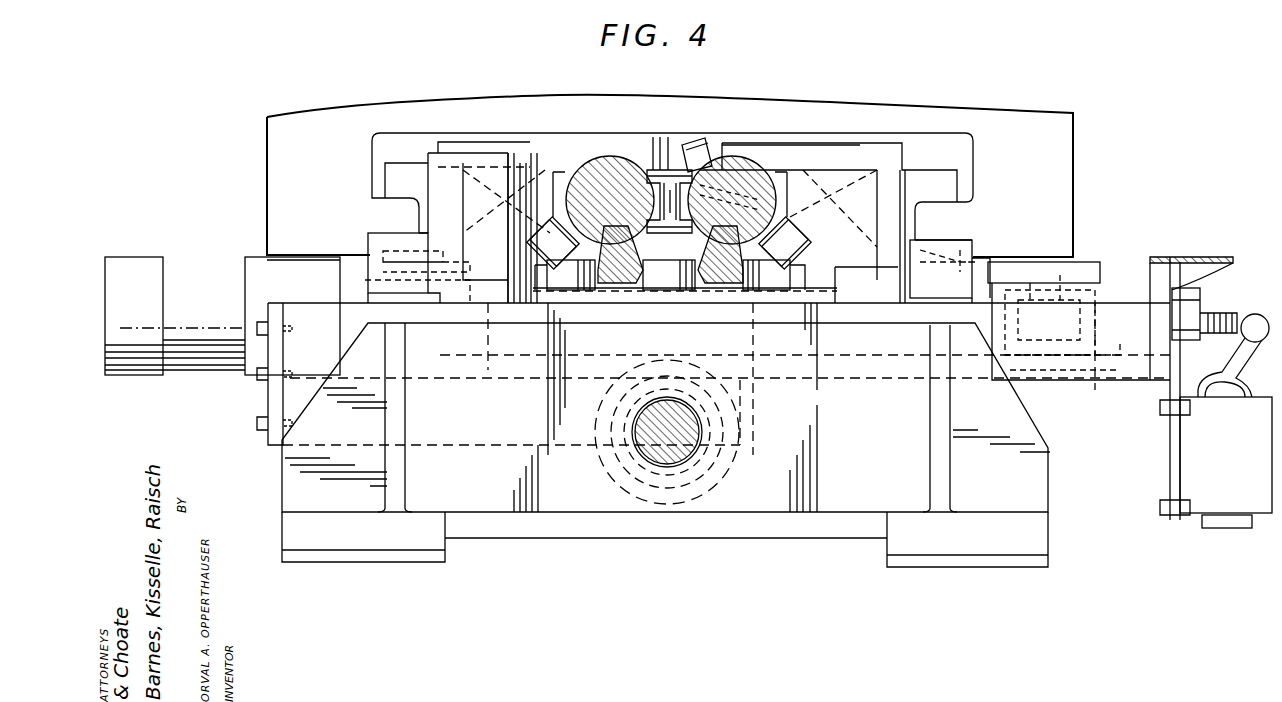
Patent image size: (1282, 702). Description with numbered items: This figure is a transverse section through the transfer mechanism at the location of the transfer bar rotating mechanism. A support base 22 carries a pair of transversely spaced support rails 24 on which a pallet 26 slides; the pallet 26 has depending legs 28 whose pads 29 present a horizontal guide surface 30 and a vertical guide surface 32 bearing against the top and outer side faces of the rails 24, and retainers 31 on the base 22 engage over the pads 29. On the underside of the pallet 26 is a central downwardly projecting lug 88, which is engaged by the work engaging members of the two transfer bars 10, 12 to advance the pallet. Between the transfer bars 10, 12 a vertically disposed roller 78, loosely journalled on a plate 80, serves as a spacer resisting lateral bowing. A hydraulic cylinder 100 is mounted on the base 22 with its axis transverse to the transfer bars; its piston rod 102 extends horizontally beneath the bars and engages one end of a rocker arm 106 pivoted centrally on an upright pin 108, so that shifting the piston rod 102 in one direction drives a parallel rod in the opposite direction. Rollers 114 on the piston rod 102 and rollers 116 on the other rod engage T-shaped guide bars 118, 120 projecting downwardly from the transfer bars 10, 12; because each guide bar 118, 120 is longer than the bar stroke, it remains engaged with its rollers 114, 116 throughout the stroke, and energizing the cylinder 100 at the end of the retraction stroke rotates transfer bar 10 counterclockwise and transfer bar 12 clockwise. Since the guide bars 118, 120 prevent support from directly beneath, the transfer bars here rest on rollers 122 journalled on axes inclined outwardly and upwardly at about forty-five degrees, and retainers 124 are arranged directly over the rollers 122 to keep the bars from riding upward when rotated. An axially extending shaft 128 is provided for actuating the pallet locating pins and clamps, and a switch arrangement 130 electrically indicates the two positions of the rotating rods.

The transfer bar 10 is at (612, 160).
The transfer bar 12 is at (745, 162).
The support base 22 is at (968, 540).
The support rail 24 is at (386, 242).
The pallet 26 is at (1068, 168).
The depending leg 28 is at (272, 194).
The pad 29 is at (392, 208).
The horizontal guide surface 30 is at (398, 236).
The retainer 31 is at (408, 168).
The vertical guide surface 32 is at (366, 248).
The roller 78 is at (680, 225).
The plate 80 is at (657, 165).
The lug 88 is at (694, 142).
The hydraulic cylinder 100 is at (203, 276).
The piston rod 102 is at (1195, 312).
The rocker arm 106 is at (1095, 316).
The upright pin 108 is at (1098, 345).
The roller 114 is at (578, 310).
The roller 116 is at (702, 312).
The T-shaped guide bar 118 is at (633, 244).
The T-shaped guide bar 120 is at (728, 292).
The roller 122 is at (533, 243).
The retainer 124 is at (575, 143).
The shaft 128 is at (685, 452).
The switch arrangement 130 is at (1258, 290).